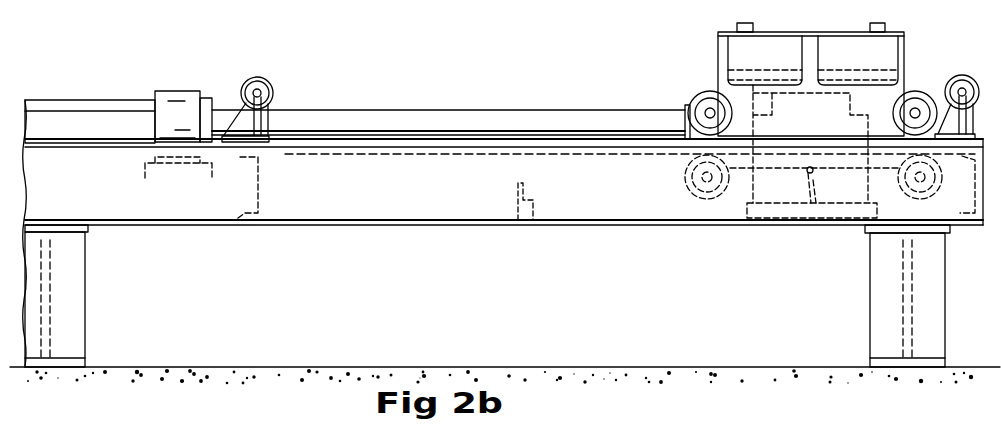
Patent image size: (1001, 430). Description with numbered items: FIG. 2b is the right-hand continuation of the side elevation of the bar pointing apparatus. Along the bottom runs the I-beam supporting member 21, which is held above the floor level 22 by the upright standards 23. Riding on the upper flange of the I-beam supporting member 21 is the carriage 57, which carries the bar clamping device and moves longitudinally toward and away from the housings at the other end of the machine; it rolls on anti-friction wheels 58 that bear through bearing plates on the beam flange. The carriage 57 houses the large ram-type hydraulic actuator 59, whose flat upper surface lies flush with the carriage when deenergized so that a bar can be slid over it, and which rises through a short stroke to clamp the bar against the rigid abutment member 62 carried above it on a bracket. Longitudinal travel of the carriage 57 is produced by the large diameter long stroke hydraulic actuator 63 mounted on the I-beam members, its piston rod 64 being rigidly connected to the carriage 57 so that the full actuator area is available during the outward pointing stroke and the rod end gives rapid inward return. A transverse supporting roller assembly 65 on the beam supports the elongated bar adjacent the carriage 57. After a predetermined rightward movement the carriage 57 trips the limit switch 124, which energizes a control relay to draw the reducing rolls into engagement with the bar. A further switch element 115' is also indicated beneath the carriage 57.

The I-beam supporting member 21 is at (378, 212).
The floor level 22 is at (480, 372).
The standard 23 is at (76, 290).
The carriage 57 is at (798, 103).
The anti-friction wheel 58 is at (921, 92).
The ram-type hydraulic actuator 59 is at (855, 123).
The abutment member 62 is at (797, 33).
The long stroke hydraulic actuator 63 is at (98, 109).
The piston rod 64 is at (382, 118).
The transverse supporting roller assembly 65 is at (979, 80).
The limit switch 124 is at (538, 200).
The plate 115' is at (812, 229).